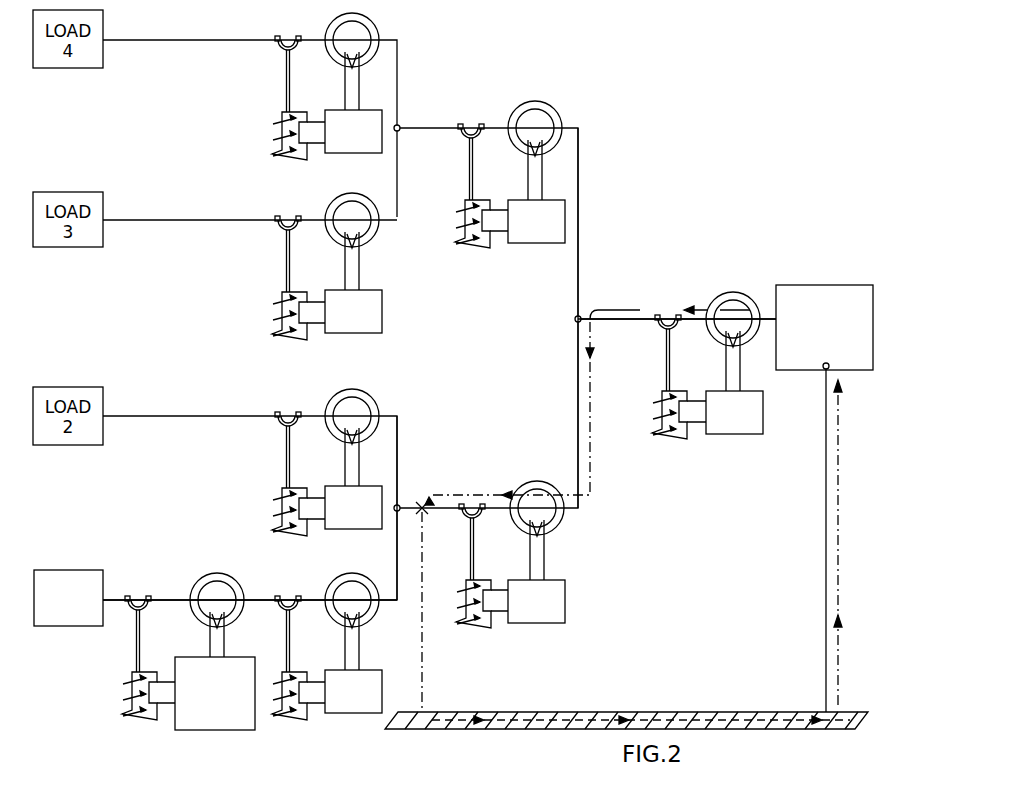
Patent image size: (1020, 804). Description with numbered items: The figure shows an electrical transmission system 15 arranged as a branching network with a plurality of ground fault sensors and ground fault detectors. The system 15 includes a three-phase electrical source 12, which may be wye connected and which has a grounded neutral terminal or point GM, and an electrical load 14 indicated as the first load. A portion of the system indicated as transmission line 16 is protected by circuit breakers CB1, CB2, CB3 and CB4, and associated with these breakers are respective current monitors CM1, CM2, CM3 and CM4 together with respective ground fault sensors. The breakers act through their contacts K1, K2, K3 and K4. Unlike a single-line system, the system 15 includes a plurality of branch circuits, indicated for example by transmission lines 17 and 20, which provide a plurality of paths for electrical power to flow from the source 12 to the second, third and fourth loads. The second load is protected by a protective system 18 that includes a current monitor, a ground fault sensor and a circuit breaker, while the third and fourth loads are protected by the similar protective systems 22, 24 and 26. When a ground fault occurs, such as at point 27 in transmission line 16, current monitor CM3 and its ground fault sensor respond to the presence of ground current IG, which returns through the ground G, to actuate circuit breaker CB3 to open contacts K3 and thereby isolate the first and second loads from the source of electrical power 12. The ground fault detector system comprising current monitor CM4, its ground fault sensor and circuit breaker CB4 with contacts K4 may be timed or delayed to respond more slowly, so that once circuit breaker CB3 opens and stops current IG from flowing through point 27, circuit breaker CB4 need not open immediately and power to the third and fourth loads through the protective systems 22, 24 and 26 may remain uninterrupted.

The electrical source 12 is at (849, 291).
The electrical load 14 is at (52, 568).
The electrical transmission system 15 is at (523, 159).
The transmission line 16 is at (379, 603).
The transmission line 17 is at (397, 418).
The protective system 18 is at (397, 394).
The transmission line 20 is at (578, 262).
The protective system 22 is at (592, 123).
The protective system 24 is at (407, 36).
The protective system 26 is at (407, 247).
The ground fault point 27 is at (426, 512).
The contacts K1 is at (141, 596).
The contacts K2 is at (290, 596).
The contacts K3 is at (471, 500).
The contacts K4 is at (669, 312).
The circuit breaker CB1 is at (130, 690).
The circuit breaker CB2 is at (280, 717).
The circuit breaker CB3 is at (466, 620).
The circuit breaker CB4 is at (655, 440).
The current monitor CM1 is at (216, 576).
The current monitor CM2 is at (350, 576).
The current monitor CM3 is at (538, 484).
The current monitor CM4 is at (735, 294).
The grounded neutral point GM is at (822, 372).
The ground current IG is at (631, 308).
The ground G is at (868, 709).